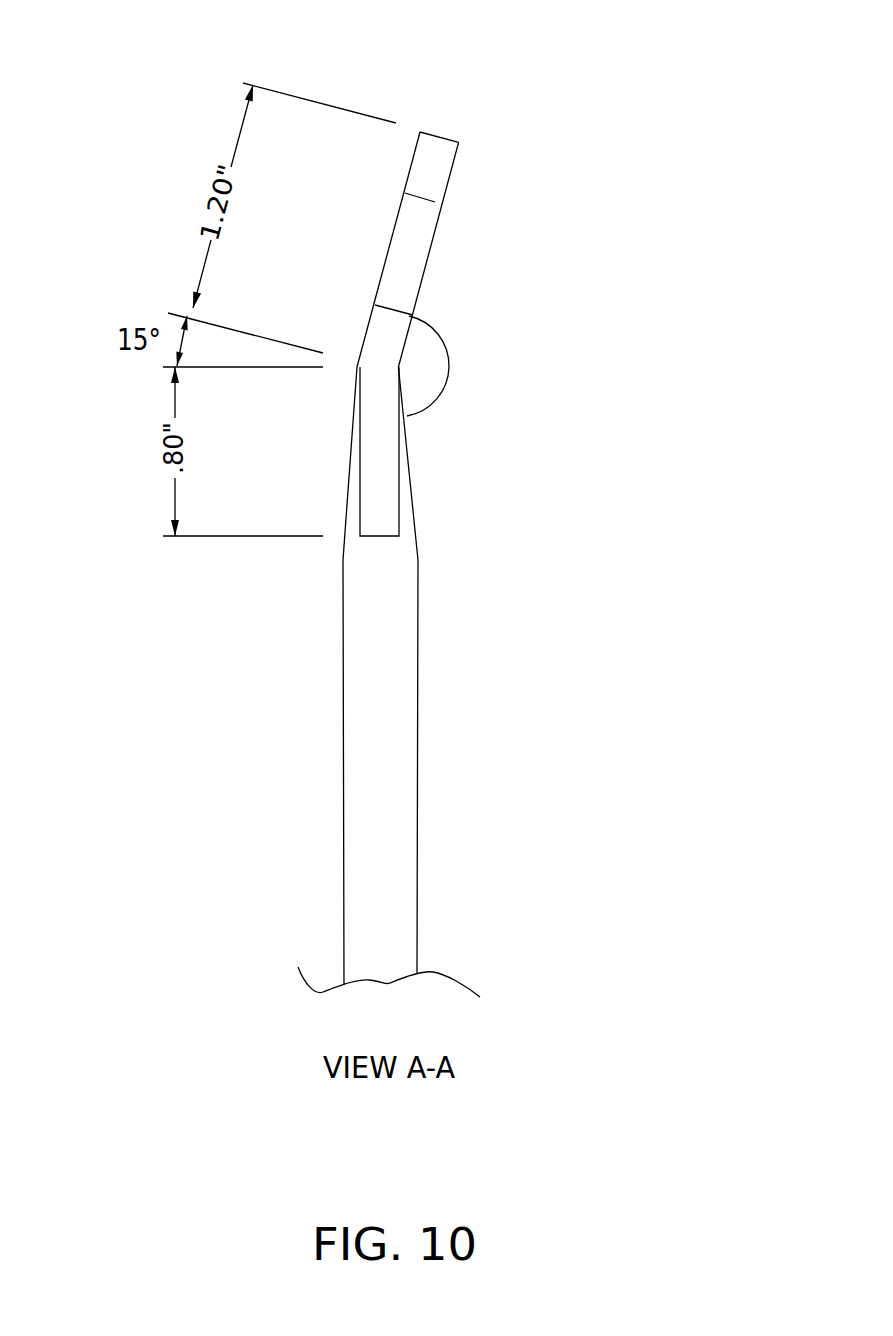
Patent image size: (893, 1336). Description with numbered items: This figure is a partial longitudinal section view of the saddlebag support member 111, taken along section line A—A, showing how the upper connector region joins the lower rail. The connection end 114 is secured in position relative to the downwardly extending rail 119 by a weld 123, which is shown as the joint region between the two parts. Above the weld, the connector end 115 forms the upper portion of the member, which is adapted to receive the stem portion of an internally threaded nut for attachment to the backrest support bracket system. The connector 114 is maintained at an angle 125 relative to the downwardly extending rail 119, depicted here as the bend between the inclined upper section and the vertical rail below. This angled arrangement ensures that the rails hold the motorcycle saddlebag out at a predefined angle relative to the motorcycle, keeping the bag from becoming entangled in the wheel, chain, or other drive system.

The saddlebag support member 111 is at (150, 73).
The connection end 114 is at (450, 157).
The connector end 115 is at (428, 230).
The angle 125 is at (450, 368).
The weld 123 is at (400, 500).
The downwardly extending rail 119 is at (398, 715).